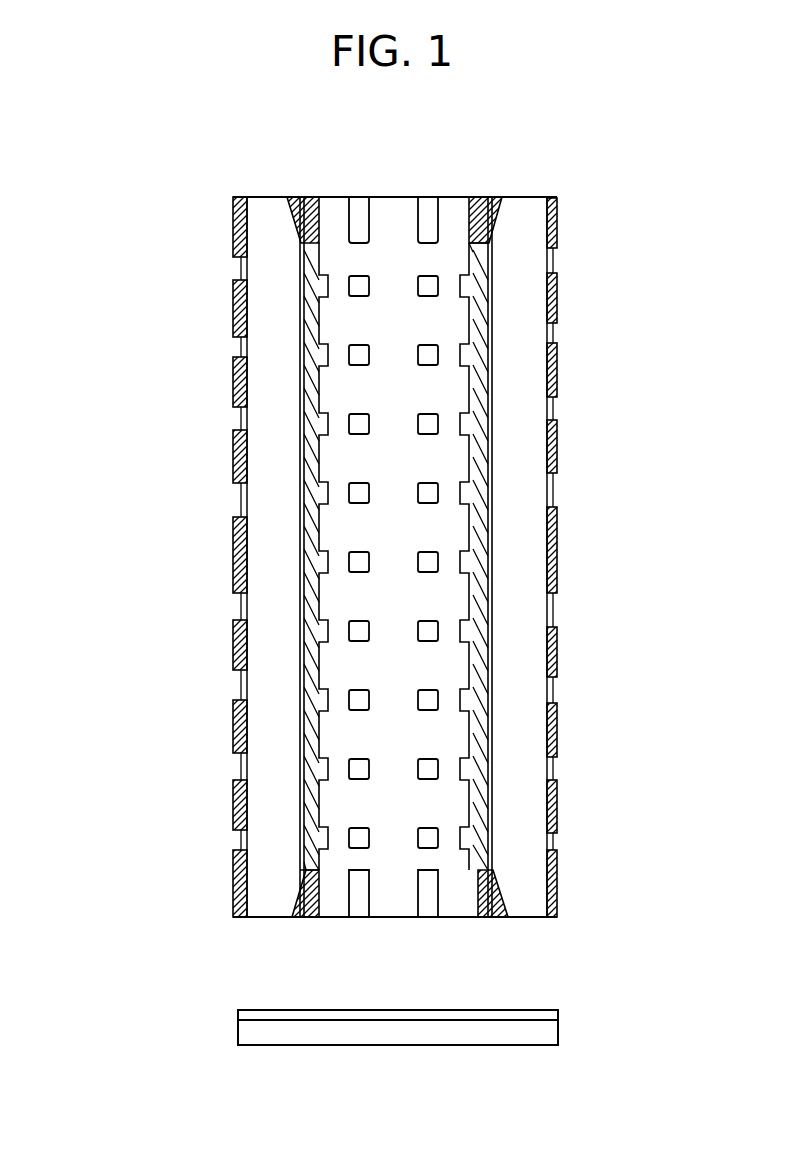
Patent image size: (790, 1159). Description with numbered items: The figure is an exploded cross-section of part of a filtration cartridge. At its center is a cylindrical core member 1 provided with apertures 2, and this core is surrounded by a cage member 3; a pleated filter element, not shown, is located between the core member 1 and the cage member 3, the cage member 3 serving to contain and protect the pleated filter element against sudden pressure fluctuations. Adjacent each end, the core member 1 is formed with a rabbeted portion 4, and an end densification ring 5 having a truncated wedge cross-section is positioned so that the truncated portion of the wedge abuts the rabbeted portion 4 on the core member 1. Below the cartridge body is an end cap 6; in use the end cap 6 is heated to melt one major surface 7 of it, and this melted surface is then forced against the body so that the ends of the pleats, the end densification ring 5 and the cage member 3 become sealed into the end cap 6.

The cylindrical core member 1 is at (488, 466).
The apertures 2 is at (438, 560).
The cage member 3 is at (557, 320).
The rabbeted portion 4 is at (493, 253).
The end densification ring 5 is at (527, 198).
The end cap 6 is at (446, 1041).
The major surface 7 is at (507, 1013).